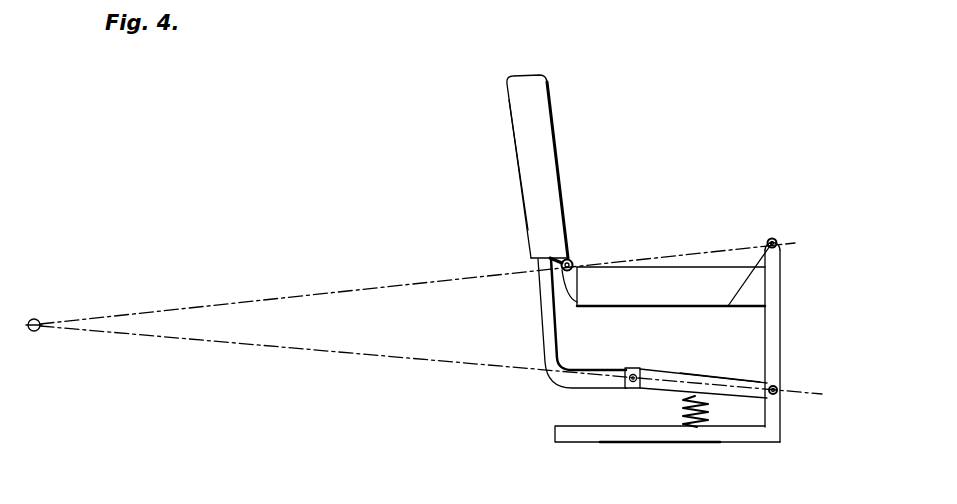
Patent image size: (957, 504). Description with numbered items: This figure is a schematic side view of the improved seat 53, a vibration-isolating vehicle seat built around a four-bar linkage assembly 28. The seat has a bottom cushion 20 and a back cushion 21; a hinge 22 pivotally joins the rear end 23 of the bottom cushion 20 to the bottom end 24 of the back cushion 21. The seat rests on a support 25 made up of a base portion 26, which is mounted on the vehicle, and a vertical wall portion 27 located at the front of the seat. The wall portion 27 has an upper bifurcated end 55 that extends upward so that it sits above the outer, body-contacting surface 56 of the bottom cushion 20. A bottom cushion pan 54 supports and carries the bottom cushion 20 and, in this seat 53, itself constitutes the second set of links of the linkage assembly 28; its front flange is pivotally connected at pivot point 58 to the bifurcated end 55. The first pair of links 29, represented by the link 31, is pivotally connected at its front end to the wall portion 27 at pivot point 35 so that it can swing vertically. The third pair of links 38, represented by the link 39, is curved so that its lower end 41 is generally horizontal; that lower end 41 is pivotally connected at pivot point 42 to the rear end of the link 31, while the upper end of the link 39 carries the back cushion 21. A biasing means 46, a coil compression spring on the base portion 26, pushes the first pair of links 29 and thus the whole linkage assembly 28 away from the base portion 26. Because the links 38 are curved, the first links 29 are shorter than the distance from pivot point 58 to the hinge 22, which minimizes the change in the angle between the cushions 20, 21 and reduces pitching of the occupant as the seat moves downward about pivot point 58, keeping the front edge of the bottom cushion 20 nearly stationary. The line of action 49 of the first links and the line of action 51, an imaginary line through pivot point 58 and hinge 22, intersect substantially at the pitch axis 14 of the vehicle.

The pitch axis 14 is at (40, 320).
The bottom cushion 20 is at (643, 262).
The back cushion 21 is at (531, 105).
The hinge 22 is at (571, 258).
The rear end of the bottom cushion 23 is at (607, 296).
The bottom end of the back cushion 24 is at (527, 204).
The support 25 is at (606, 444).
The base portion 26 is at (657, 433).
The vertical wall portion 27 is at (782, 432).
The four-bar linkage assembly 28 is at (612, 337).
The first pair of links 29 is at (668, 383).
The link 31 is at (711, 382).
The pivot point 35 is at (782, 389).
The third pair of links 38 is at (536, 308).
The link 39 is at (547, 346).
The lower end of the link 41 is at (620, 376).
The pivot point 42 is at (628, 389).
The biasing means 46 is at (708, 410).
The line of action 49 is at (377, 357).
The line of action 51 is at (388, 284).
The improved seat 53 is at (638, 213).
The bottom cushion pan 54 is at (700, 306).
The bifurcated end 55 is at (785, 262).
The outer surface 56 is at (688, 266).
The pivot point 58 is at (775, 239).